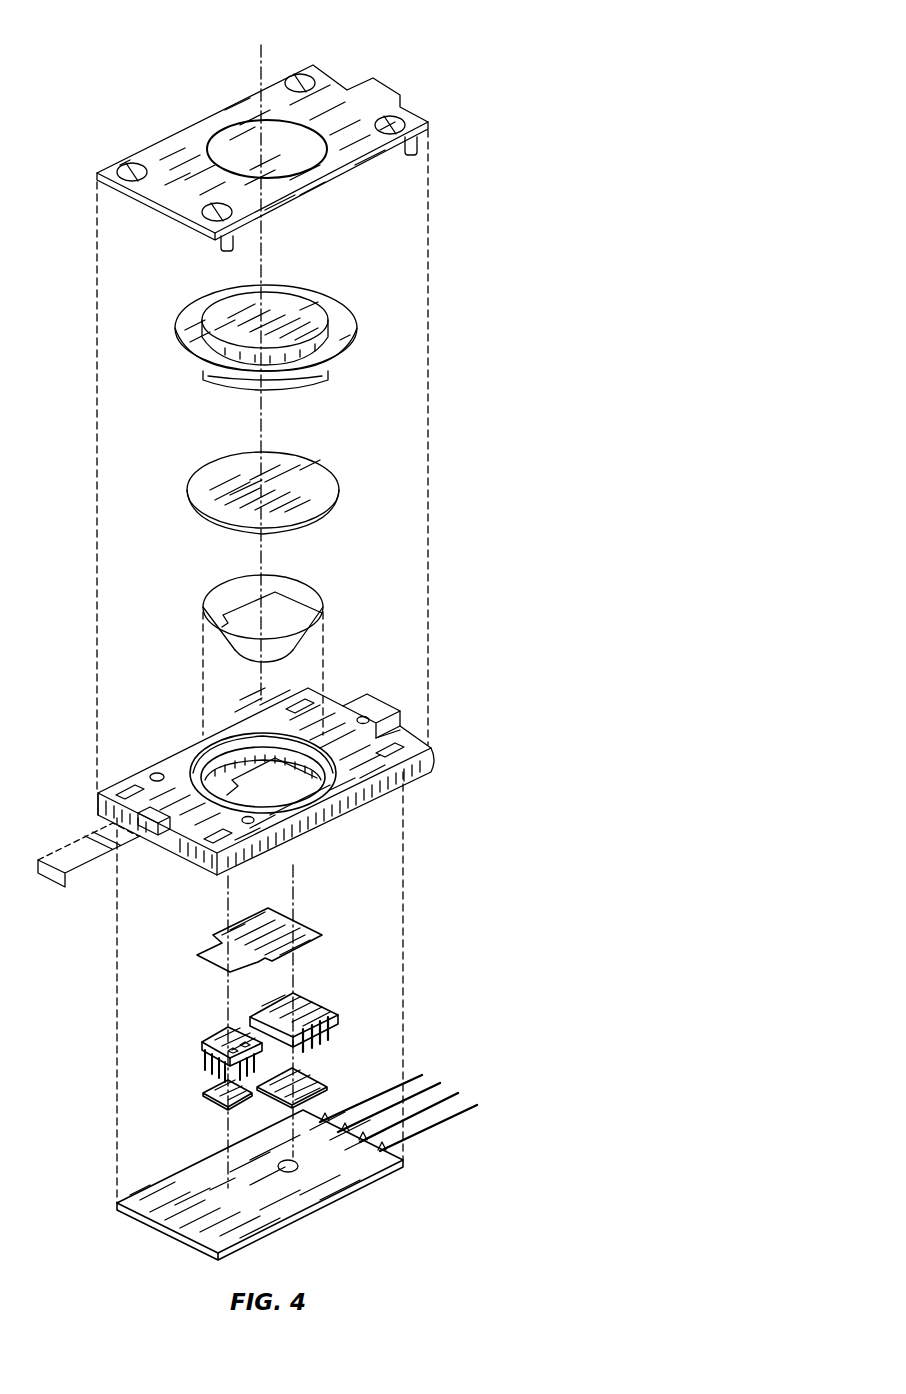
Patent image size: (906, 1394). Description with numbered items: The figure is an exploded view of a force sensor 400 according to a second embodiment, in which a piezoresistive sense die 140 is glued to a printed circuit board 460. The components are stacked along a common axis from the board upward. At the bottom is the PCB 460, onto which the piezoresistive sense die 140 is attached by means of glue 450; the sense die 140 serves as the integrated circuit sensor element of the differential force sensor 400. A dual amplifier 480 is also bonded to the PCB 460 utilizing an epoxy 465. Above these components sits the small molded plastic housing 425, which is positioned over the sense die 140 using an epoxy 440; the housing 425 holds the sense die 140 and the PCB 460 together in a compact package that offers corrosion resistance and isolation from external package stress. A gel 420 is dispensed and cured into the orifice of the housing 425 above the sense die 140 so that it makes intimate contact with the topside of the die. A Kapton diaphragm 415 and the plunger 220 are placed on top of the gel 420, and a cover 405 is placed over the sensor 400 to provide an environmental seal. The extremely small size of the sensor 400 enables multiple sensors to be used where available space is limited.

The force sensor 400 is at (484, 50).
The cover 405 is at (158, 152).
The plunger 220 is at (187, 323).
The Kapton diaphragm 415 is at (213, 473).
The gel 420 is at (217, 597).
The housing 425 is at (380, 713).
The epoxy 440 is at (305, 935).
The piezoresistive sense die 140 is at (310, 1002).
The dual amplifier 480 is at (218, 1033).
The epoxy 465 is at (220, 1087).
The glue 450 is at (308, 1077).
The printed circuit board 460 is at (208, 1160).